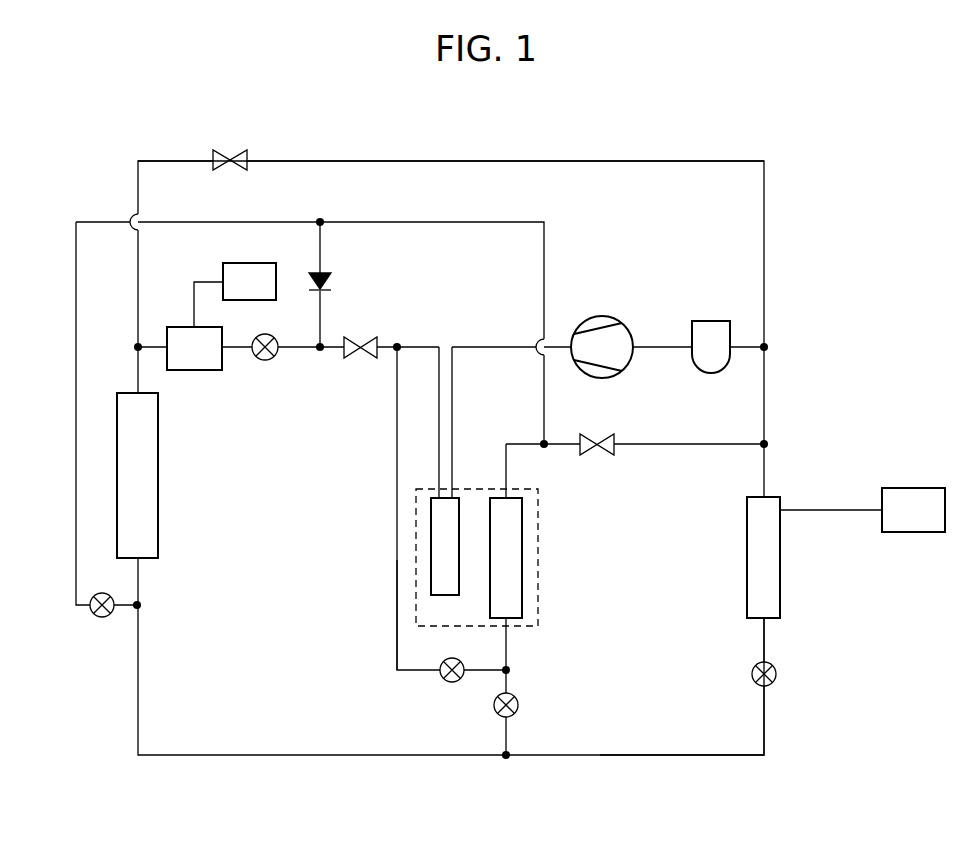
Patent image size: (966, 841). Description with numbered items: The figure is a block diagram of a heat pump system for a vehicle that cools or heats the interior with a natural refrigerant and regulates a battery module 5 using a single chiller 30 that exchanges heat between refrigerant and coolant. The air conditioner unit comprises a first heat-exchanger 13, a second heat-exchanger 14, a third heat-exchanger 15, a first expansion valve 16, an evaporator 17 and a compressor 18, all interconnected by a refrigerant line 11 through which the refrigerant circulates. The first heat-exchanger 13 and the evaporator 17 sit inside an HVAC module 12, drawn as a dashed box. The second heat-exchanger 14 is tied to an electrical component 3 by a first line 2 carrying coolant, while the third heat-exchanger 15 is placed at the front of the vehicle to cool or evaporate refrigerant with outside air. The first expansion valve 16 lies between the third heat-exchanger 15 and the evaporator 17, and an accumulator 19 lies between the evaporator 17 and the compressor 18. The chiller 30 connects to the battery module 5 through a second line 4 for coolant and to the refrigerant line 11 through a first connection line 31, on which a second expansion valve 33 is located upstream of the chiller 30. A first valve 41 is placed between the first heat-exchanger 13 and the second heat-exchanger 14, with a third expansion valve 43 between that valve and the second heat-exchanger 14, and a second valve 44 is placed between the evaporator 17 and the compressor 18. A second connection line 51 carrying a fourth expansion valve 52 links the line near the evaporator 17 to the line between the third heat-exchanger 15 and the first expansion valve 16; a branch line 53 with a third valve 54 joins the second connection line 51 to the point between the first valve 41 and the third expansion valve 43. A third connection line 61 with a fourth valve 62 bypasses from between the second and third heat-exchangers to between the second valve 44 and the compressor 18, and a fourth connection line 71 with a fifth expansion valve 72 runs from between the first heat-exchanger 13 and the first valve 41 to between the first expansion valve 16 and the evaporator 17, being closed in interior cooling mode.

The first line 2 is at (194, 291).
The electrical component 3 is at (223, 270).
The second line 4 is at (830, 510).
The battery module 5 is at (915, 488).
The refrigerant line 11 is at (439, 385).
The HVAC module 12 is at (538, 503).
The first heat-exchanger 13 is at (431, 517).
The second heat-exchanger 14 is at (195, 370).
The third heat-exchanger 15 is at (158, 474).
The first expansion valve 16 is at (518, 705).
The evaporator 17 is at (522, 557).
The compressor 18 is at (614, 316).
The accumulator 19 is at (716, 321).
The chiller 30 is at (780, 556).
The first connection line 31 is at (764, 735).
The second expansion valve 33 is at (776, 674).
The first valve 41 is at (360, 358).
The third expansion valve 43 is at (265, 360).
The second valve 44 is at (613, 437).
The second connection line 51 is at (506, 222).
The fourth expansion valve 52 is at (94, 613).
The branch line 53 is at (320, 248).
The third valve 54 is at (331, 283).
The third connection line 61 is at (608, 161).
The fourth valve 62 is at (237, 150).
The fourth connection line 71 is at (414, 596).
The fifth expansion valve 72 is at (448, 682).